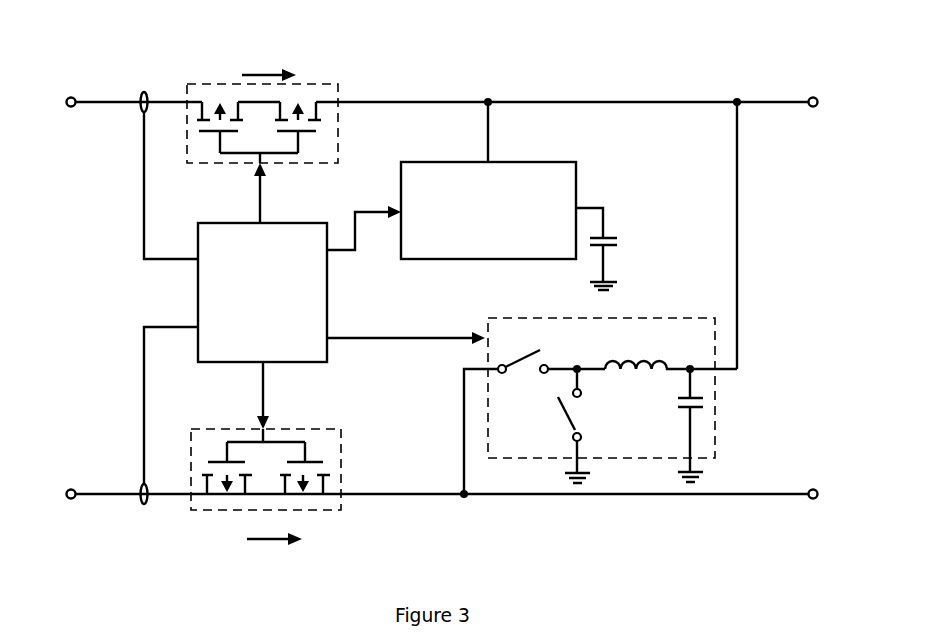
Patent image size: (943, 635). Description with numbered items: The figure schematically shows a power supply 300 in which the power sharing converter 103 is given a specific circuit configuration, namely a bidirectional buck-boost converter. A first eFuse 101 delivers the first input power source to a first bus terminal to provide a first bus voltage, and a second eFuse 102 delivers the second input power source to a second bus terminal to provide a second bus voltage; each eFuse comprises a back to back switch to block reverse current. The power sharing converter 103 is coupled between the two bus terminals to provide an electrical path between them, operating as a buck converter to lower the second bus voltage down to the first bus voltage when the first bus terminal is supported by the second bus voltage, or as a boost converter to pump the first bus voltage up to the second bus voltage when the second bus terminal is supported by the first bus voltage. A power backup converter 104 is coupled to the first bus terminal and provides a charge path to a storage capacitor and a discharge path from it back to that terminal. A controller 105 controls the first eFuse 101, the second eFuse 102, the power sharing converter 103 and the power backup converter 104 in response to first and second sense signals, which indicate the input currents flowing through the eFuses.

The power supply 300 is at (151, 43).
The first eFuse 101 is at (286, 123).
The second eFuse 102 is at (285, 483).
The power sharing converter 103 is at (706, 348).
The power backup converter 104 is at (509, 196).
The controller 105 is at (341, 296).